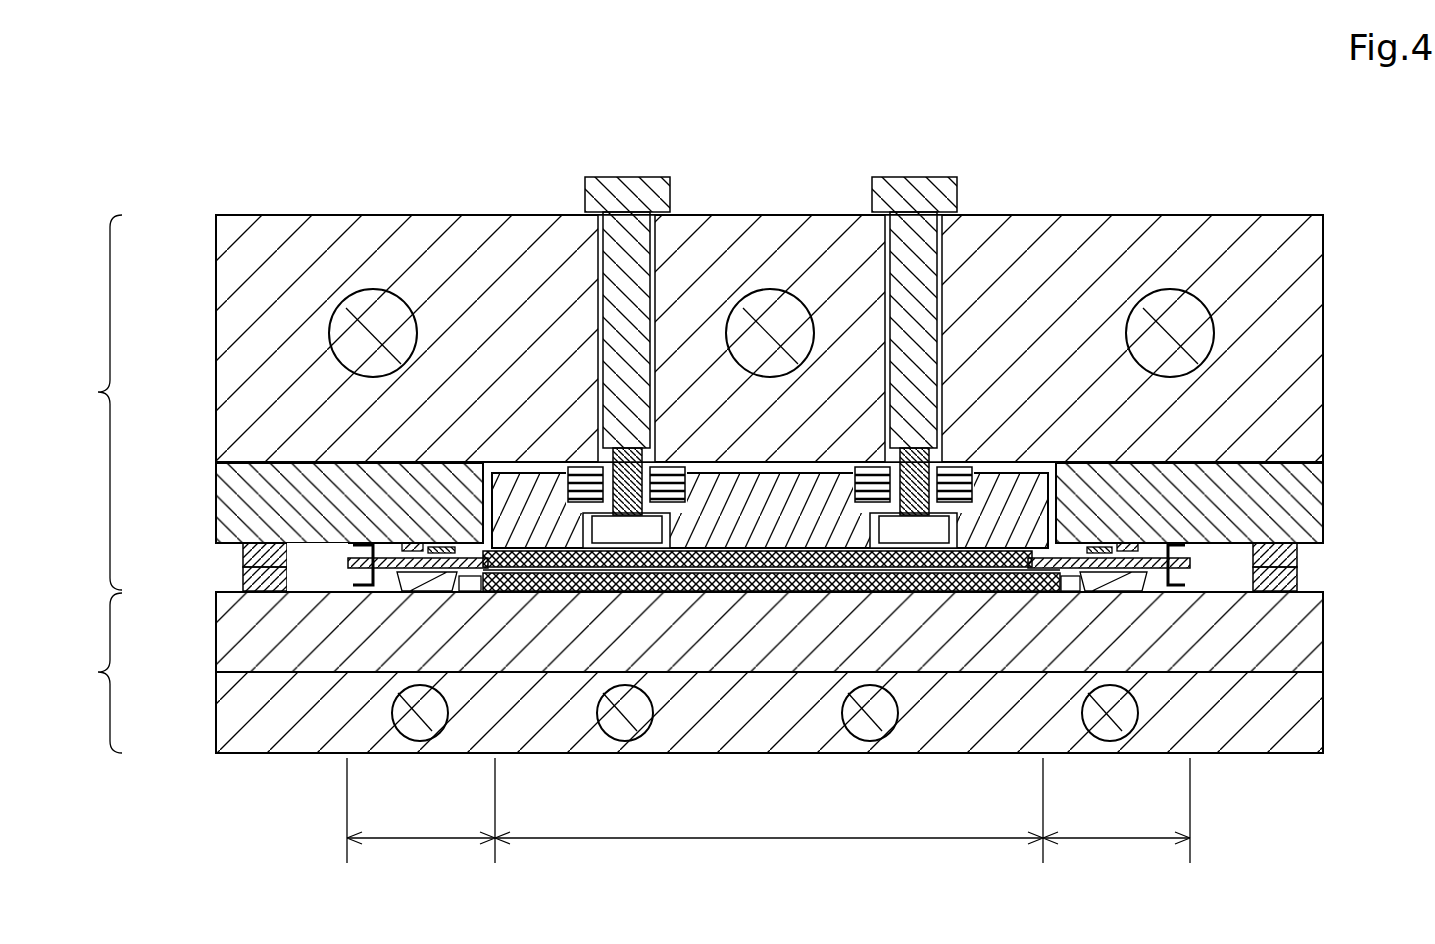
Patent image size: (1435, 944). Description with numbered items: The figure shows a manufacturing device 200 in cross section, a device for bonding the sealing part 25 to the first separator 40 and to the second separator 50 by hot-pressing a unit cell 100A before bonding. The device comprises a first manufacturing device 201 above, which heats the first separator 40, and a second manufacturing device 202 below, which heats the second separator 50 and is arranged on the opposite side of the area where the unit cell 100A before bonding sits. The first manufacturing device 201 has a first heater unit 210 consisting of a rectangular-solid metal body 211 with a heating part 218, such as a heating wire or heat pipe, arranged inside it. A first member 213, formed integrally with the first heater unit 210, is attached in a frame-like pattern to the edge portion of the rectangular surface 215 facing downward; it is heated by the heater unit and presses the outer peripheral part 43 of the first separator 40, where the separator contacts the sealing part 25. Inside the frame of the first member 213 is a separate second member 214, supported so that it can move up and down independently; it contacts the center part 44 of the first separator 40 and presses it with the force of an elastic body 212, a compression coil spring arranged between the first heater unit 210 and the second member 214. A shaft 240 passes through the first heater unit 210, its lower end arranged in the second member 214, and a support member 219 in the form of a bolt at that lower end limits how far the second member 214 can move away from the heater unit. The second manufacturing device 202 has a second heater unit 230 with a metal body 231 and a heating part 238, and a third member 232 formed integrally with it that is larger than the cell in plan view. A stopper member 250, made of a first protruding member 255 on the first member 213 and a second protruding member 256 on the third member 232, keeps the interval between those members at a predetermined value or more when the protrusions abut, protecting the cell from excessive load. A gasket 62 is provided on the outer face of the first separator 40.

The manufacturing device 200 is at (1234, 166).
The first manufacturing device 201 is at (87, 402).
The second manufacturing device 202 is at (87, 673).
The first heater unit 210 is at (1331, 211).
The body 211 is at (1310, 287).
The elastic body 212 is at (660, 468).
The first member 213 is at (260, 488).
The second member 214 is at (1023, 470).
The surface 215 is at (521, 470).
The heating part 218 is at (370, 330).
The support member 219 is at (655, 533).
The second heater unit 230 is at (1340, 762).
The body 231 is at (1310, 722).
The third member 232 is at (1310, 628).
The heating part 238 is at (420, 728).
The shaft 240 is at (628, 177).
The stopper member 250 is at (236, 567).
The first protruding member 255 is at (243, 550).
The second protruding member 256 is at (243, 588).
The first separator 40 is at (1188, 547).
The sealing part 25 is at (1253, 569).
The second separator 50 is at (1188, 584).
The gasket 62 is at (436, 545).
The unit cell before bonding 100A is at (335, 572).
The outer peripheral part 43 is at (768, 817).
The center part 44 is at (769, 861).